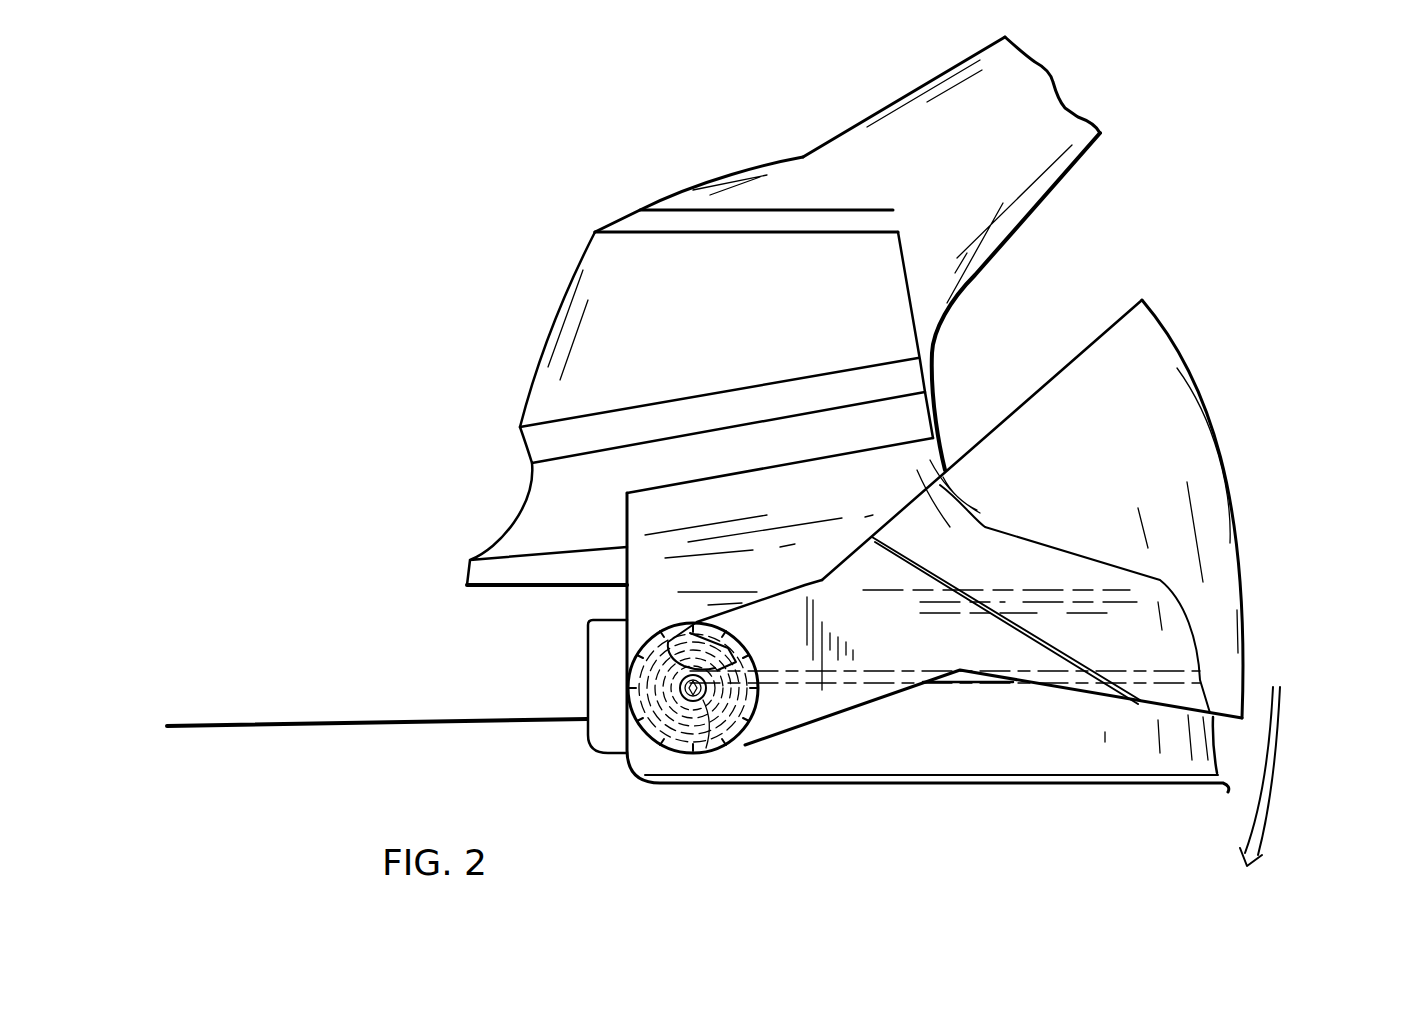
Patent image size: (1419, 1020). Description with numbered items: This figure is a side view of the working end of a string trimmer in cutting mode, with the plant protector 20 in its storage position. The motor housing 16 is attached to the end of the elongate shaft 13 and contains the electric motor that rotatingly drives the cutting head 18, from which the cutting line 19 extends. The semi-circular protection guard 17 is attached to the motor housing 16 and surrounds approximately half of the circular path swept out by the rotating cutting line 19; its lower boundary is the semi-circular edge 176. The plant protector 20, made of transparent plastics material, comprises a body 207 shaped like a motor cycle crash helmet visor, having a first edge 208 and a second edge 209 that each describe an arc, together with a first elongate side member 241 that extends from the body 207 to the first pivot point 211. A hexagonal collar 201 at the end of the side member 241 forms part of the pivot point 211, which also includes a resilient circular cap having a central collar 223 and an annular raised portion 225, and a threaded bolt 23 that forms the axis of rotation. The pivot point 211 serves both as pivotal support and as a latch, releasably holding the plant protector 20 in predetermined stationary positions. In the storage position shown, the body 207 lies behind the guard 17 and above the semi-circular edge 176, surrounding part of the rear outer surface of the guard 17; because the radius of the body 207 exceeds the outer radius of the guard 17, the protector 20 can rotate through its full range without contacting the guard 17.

The elongate shaft 13 is at (984, 178).
The motor housing 16 is at (704, 308).
The cutting line 19 is at (355, 720).
The threaded bolt 23 is at (687, 690).
The cutting head 18 is at (605, 728).
The hexagonal collar 201 is at (668, 640).
The first pivot point 211 is at (662, 742).
The central collar 223 is at (698, 762).
The annular raised portion 225 is at (700, 755).
The first elongate side member 241 is at (807, 657).
The protection guard 17 is at (953, 757).
The first edge 208 is at (1124, 678).
The semi-circular edge 176 is at (1230, 788).
The second edge 209 is at (1100, 330).
The plant protector 20 is at (1173, 433).
The body 207 is at (1243, 523).